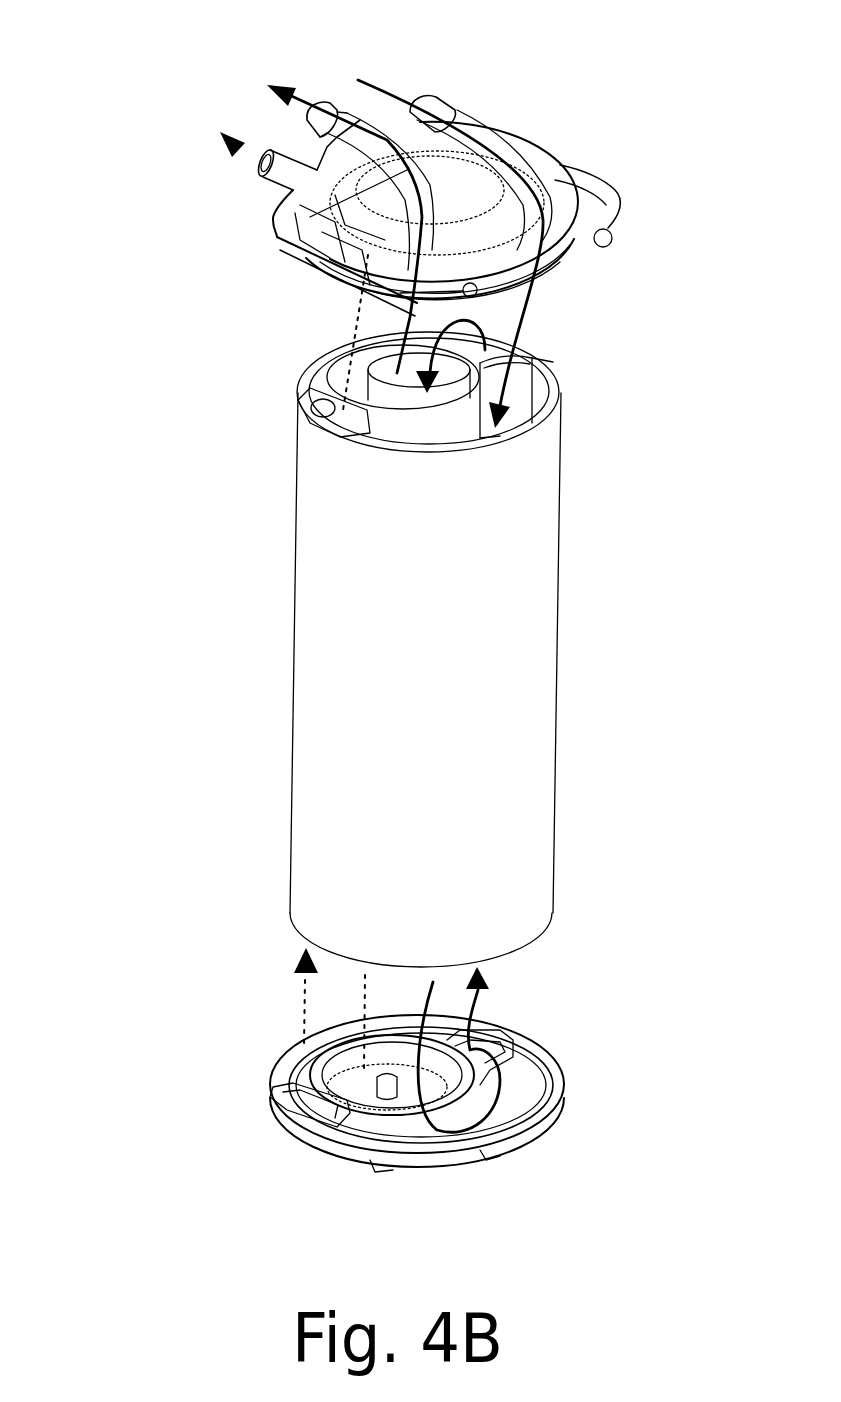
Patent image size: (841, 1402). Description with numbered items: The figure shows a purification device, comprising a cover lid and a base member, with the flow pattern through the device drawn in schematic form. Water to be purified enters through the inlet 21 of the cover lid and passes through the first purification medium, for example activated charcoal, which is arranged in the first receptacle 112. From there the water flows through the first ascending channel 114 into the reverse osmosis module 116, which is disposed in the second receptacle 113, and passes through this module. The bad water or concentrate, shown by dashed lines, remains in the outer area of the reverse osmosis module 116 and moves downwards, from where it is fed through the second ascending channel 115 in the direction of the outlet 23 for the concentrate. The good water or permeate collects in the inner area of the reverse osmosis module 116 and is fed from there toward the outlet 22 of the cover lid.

The inlet 21 is at (433, 93).
The outlet 22 is at (327, 100).
The outlet 23 is at (257, 173).
The first receptacle 112 is at (547, 420).
The second receptacle 113 is at (343, 340).
The first ascending channel 114 is at (505, 322).
The second ascending channel 115 is at (300, 398).
The reverse osmosis module 116 is at (378, 335).